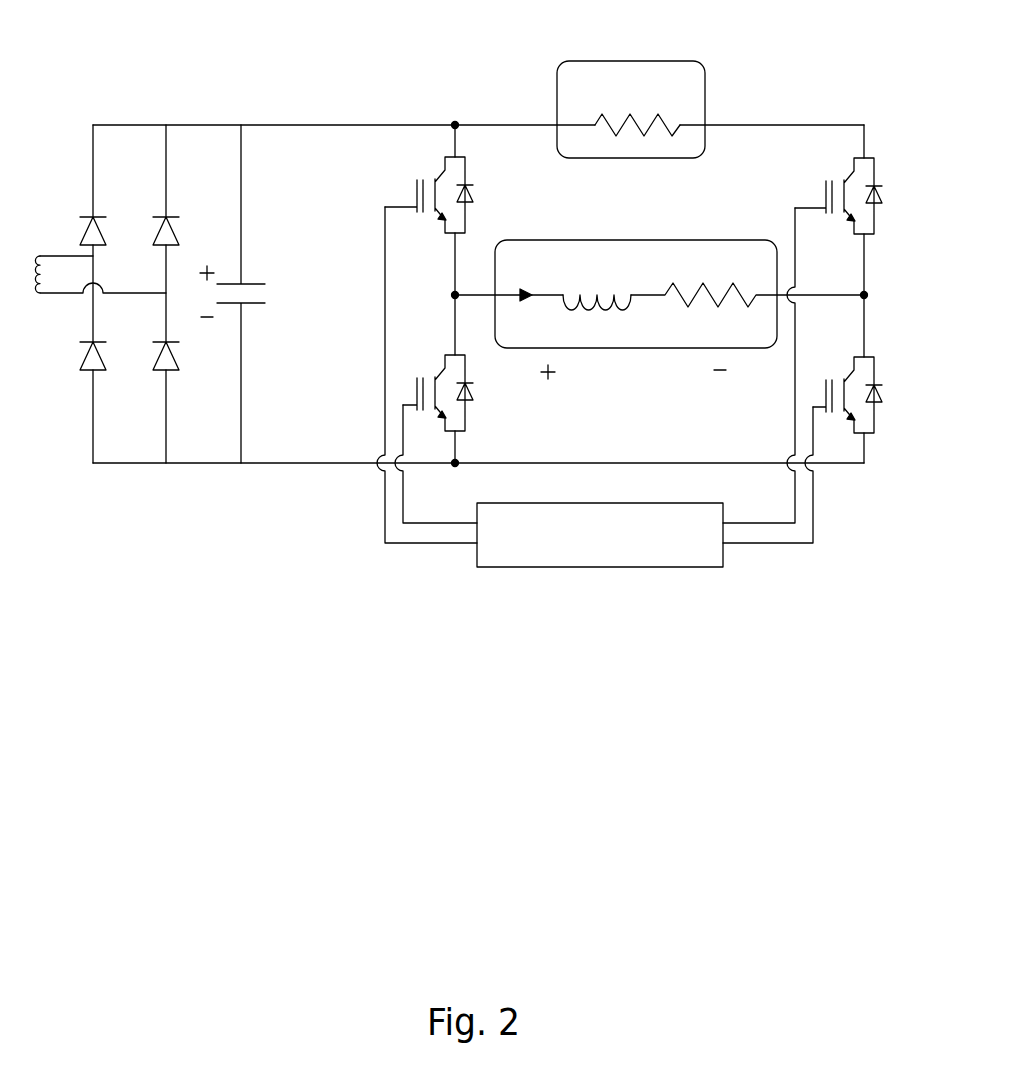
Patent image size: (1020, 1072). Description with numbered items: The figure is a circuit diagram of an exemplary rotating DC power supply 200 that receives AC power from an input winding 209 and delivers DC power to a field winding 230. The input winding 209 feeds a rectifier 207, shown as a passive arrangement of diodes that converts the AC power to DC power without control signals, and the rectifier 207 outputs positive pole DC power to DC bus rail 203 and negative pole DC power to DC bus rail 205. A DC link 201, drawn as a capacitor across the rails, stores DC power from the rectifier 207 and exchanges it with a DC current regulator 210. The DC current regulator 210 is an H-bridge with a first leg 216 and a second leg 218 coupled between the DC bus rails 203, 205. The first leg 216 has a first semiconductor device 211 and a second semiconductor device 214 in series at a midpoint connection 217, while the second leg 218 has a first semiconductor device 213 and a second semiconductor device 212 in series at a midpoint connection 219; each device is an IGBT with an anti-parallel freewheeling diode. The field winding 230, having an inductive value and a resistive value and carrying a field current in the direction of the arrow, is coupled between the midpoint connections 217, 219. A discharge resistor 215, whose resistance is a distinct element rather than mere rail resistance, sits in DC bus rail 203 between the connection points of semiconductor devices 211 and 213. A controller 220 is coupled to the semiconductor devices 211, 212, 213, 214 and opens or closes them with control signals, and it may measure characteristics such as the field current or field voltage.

The rotating DC power supply 200 is at (325, 529).
The DC link 201 is at (237, 284).
The DC bus rail 203 is at (283, 125).
The DC bus rail 205 is at (285, 464).
The rectifier 207 is at (128, 471).
The input winding 209 is at (60, 256).
The DC current regulator 210 is at (835, 533).
The first semiconductor device 211 is at (467, 165).
The second semiconductor device 212 is at (876, 407).
The first semiconductor device 213 is at (876, 165).
The second semiconductor device 214 is at (467, 406).
The discharge resistor 215 is at (628, 61).
The first leg 216 is at (484, 246).
The midpoint connection 217 is at (452, 295).
The second leg 218 is at (890, 437).
The midpoint connection 219 is at (870, 295).
The controller 220 is at (628, 568).
The field winding 230 is at (625, 240).